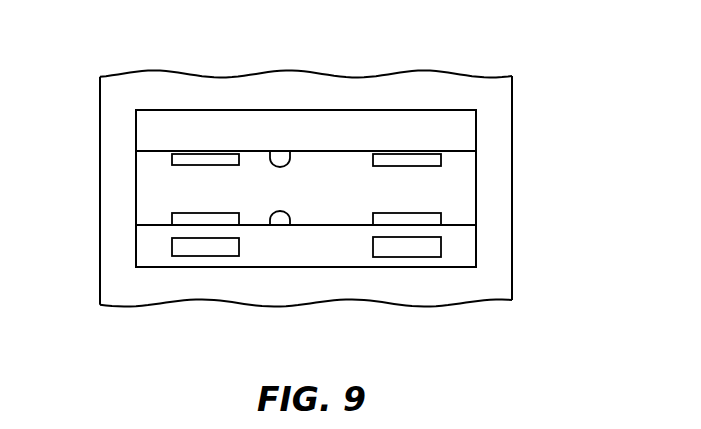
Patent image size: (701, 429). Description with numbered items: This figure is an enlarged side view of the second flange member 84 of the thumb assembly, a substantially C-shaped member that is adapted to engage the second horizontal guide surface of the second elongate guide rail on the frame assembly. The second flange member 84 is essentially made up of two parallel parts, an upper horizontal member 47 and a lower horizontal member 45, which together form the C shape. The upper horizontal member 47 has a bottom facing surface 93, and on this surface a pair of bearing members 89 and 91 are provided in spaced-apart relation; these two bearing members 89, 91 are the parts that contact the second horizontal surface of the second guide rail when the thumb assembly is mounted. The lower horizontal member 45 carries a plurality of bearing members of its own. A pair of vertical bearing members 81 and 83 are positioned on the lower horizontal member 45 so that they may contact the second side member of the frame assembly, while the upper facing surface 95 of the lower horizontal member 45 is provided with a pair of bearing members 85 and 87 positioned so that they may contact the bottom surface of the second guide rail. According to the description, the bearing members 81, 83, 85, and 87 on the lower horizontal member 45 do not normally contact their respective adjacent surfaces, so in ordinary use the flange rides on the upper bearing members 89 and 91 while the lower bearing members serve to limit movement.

The second flange member 84 is at (410, 111).
The upper horizontal member 47 is at (136, 133).
The lower horizontal member 45 is at (136, 245).
The bearing member 89 is at (188, 166).
The bearing member 91 is at (425, 167).
The bearing member 85 is at (188, 212).
The bearing member 87 is at (425, 212).
The vertical bearing member 81 is at (187, 257).
The vertical bearing member 83 is at (423, 258).
The bottom facing surface 93 is at (290, 151).
The upper facing surface 95 is at (290, 225).